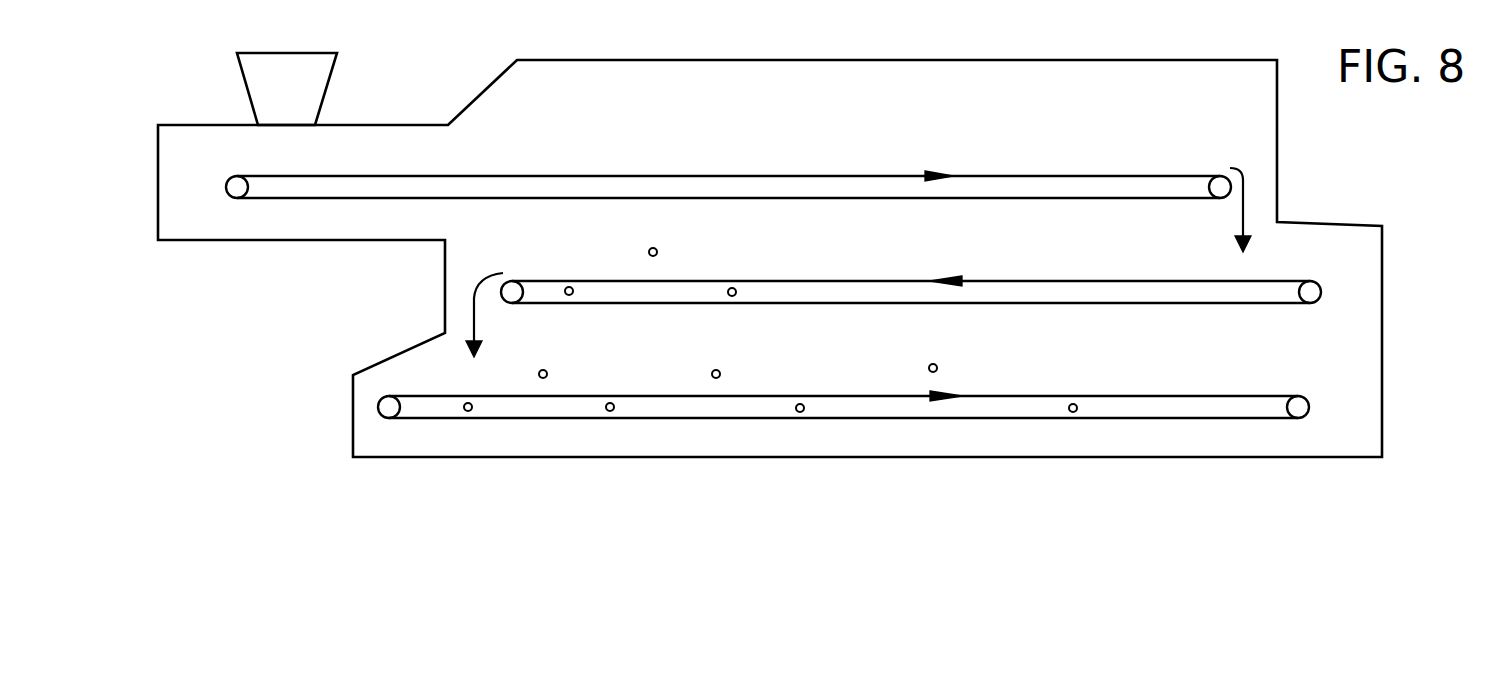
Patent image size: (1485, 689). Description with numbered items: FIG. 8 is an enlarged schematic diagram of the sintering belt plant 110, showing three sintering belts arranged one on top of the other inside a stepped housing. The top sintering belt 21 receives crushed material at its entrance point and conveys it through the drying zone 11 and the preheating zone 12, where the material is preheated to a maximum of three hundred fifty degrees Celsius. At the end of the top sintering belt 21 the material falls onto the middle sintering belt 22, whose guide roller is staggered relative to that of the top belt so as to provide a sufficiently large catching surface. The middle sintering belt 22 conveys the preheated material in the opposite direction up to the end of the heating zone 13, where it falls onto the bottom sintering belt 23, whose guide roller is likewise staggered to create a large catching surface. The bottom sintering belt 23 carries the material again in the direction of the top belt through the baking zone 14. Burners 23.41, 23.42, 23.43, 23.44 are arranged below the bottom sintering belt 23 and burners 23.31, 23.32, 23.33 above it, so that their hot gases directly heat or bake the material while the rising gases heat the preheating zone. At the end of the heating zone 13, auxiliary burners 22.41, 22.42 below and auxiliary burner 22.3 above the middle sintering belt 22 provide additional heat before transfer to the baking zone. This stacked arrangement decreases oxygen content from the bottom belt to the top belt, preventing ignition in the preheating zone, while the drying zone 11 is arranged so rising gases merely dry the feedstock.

The drying apparatus with feed hopper 110 is at (377, 97).
The drying zone 11 is at (770, 238).
The preheating zone 12 is at (962, 78).
The heating zone 13 is at (920, 255).
The baking zone 14 is at (1025, 368).
The top sintering belt 21 is at (1133, 176).
The middle sintering belt 22 is at (1118, 278).
The bottom sintering belt 23 is at (1120, 394).
The auxiliary burner 22.3 is at (657, 250).
The auxiliary burner 22.41 is at (569, 295).
The auxiliary burner 22.42 is at (735, 296).
The burner 23.31 is at (547, 374).
The burner 23.32 is at (720, 373).
The burner 23.33 is at (937, 365).
The burner 23.41 is at (466, 411).
The burner 23.42 is at (611, 411).
The burner 23.43 is at (800, 412).
The burner 23.44 is at (1075, 412).